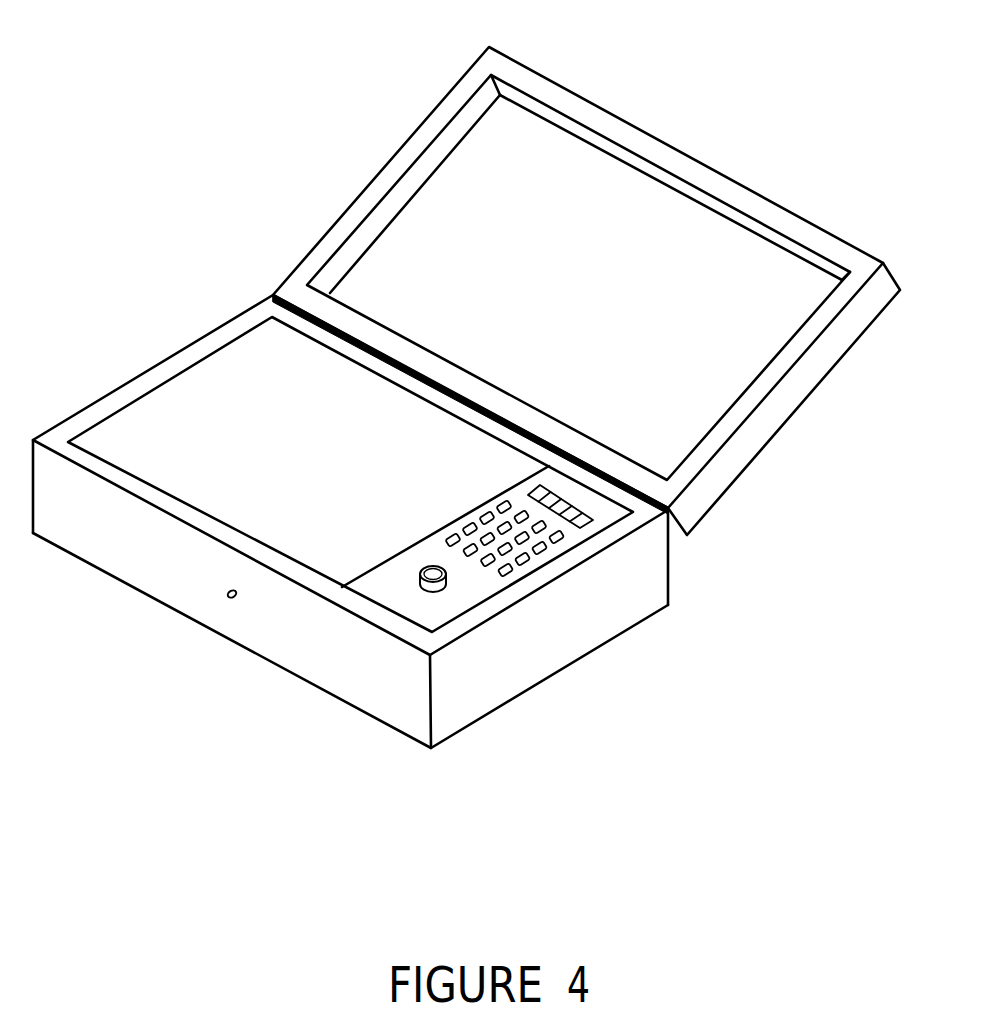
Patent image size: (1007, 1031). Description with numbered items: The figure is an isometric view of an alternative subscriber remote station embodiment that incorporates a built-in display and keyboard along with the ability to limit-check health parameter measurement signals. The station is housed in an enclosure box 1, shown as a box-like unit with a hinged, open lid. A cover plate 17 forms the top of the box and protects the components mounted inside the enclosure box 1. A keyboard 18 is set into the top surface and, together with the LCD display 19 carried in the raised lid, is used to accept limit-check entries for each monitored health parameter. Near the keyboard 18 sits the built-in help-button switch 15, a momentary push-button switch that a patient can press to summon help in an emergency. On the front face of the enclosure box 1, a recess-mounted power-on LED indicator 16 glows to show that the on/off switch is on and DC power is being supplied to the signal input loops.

The enclosure box 1 is at (378, 693).
The help-button switch 15 is at (445, 579).
The power-on LED indicator 16 is at (224, 596).
The cover plate 17 is at (235, 378).
The keyboard 18 is at (558, 548).
The LCD display 19 is at (640, 494).